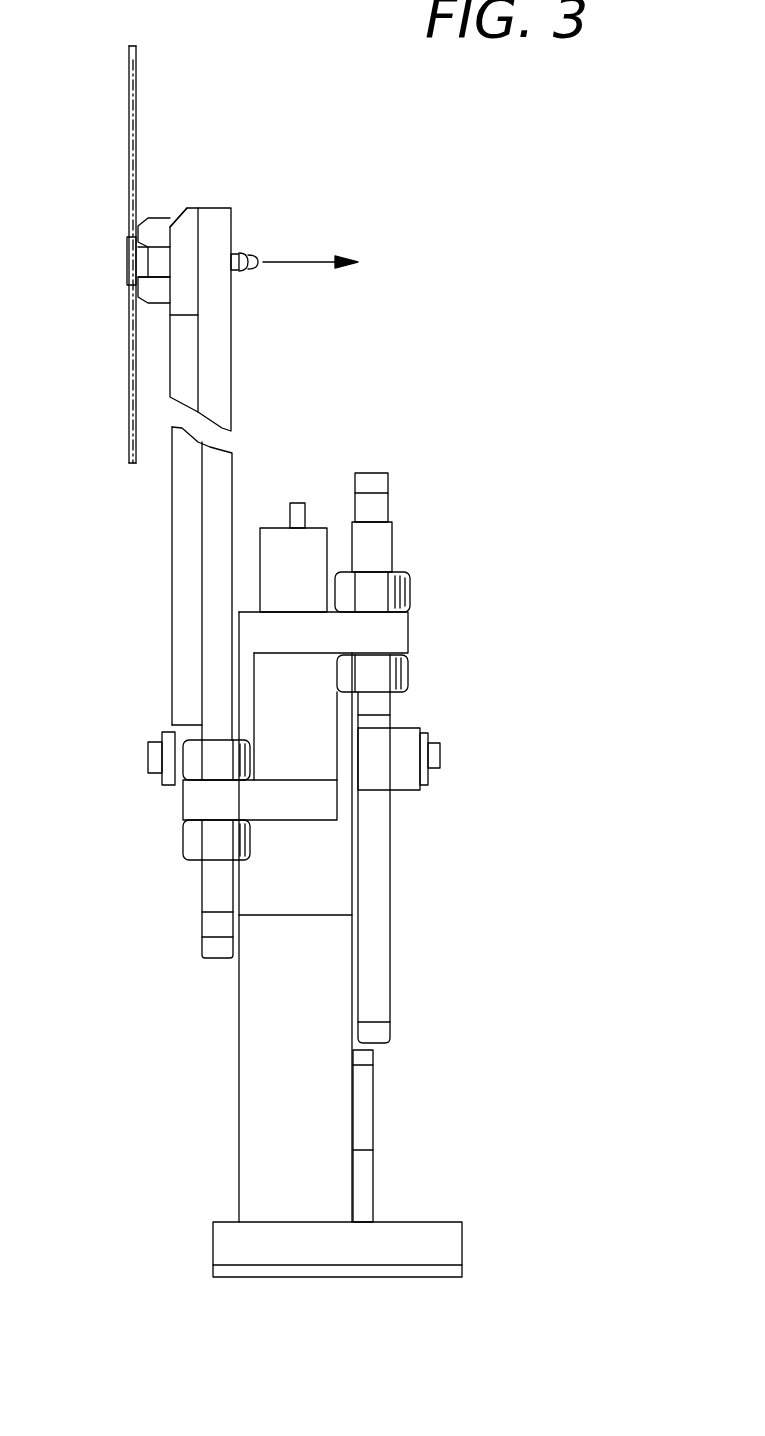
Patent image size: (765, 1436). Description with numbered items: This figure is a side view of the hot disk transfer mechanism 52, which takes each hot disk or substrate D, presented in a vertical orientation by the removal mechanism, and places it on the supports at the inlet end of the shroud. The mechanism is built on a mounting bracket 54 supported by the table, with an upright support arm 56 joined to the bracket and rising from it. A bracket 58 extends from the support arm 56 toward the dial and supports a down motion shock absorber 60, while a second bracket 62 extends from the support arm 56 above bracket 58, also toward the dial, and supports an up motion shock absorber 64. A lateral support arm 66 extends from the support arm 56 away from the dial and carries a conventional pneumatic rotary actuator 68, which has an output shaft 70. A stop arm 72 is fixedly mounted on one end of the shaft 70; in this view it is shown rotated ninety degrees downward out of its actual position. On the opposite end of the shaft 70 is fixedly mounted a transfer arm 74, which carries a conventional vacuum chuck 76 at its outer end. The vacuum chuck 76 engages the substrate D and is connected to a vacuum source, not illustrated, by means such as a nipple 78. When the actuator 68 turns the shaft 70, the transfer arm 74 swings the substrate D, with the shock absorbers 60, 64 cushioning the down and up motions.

The substrate D is at (137, 91).
The hot disk transfer mechanism 52 is at (112, 633).
The mounting bracket 54 is at (322, 1260).
The upright support arm 56 is at (263, 1080).
The bracket 58 is at (233, 800).
The down motion shock absorber 60 is at (210, 888).
The bracket 62 is at (380, 632).
The up motion shock absorber 64 is at (380, 550).
The lateral support arm 66 is at (245, 682).
The pneumatic rotary actuator 68 is at (313, 578).
The output shaft 70 is at (433, 758).
The stop arm 72 is at (373, 887).
The transfer arm 74 is at (218, 390).
The vacuum chuck 76 is at (163, 227).
The nipple 78 is at (253, 248).